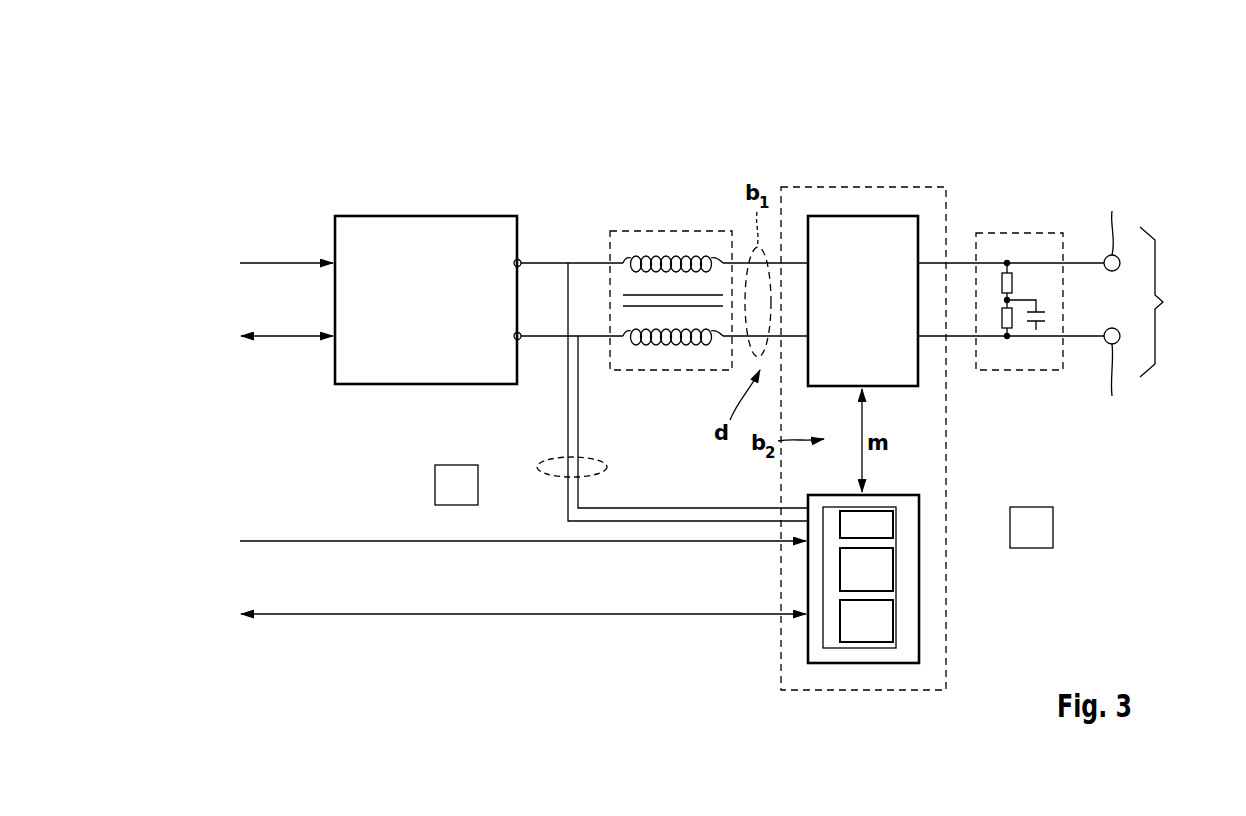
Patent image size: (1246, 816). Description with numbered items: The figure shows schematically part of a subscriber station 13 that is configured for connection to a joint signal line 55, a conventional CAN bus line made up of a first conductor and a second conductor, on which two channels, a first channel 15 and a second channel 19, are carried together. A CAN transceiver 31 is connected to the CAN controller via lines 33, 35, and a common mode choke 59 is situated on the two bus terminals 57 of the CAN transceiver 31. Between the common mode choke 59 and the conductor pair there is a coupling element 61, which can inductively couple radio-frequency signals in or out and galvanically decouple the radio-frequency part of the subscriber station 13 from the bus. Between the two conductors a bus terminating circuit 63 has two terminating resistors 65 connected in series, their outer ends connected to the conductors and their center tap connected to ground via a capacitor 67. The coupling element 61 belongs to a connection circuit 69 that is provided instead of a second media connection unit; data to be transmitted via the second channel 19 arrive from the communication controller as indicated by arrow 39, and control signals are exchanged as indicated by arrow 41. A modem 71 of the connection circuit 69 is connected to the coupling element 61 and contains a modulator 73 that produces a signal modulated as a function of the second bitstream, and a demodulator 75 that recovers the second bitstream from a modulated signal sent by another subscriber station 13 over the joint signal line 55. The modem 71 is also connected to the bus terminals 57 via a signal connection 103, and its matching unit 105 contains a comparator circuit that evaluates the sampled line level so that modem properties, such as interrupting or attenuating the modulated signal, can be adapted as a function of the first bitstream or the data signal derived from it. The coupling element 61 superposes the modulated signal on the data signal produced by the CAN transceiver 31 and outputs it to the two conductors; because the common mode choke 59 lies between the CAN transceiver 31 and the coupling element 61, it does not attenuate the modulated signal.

The subscriber station 13 is at (258, 163).
The first channel 15 is at (1143, 170).
The second channel 19 is at (1161, 183).
The CAN transceiver 31 is at (425, 216).
The line 33 is at (278, 340).
The line 35 is at (278, 263).
The arrow 39 is at (278, 618).
The arrow 41 is at (278, 541).
The joint signal line 55 is at (1138, 303).
The bus terminals 57 is at (522, 259).
The common mode choke 59 is at (669, 231).
The coupling element 61 is at (816, 216).
The bus terminating circuit 63 is at (1016, 233).
The terminating resistors 65 is at (1002, 318).
The capacitor 67 is at (1045, 317).
The connection circuit 69 is at (861, 187).
The modem 71 is at (919, 507).
The modulator 73 is at (893, 550).
The demodulator 75 is at (893, 622).
The signal connection 103 is at (538, 462).
The matching unit 105 is at (893, 533).